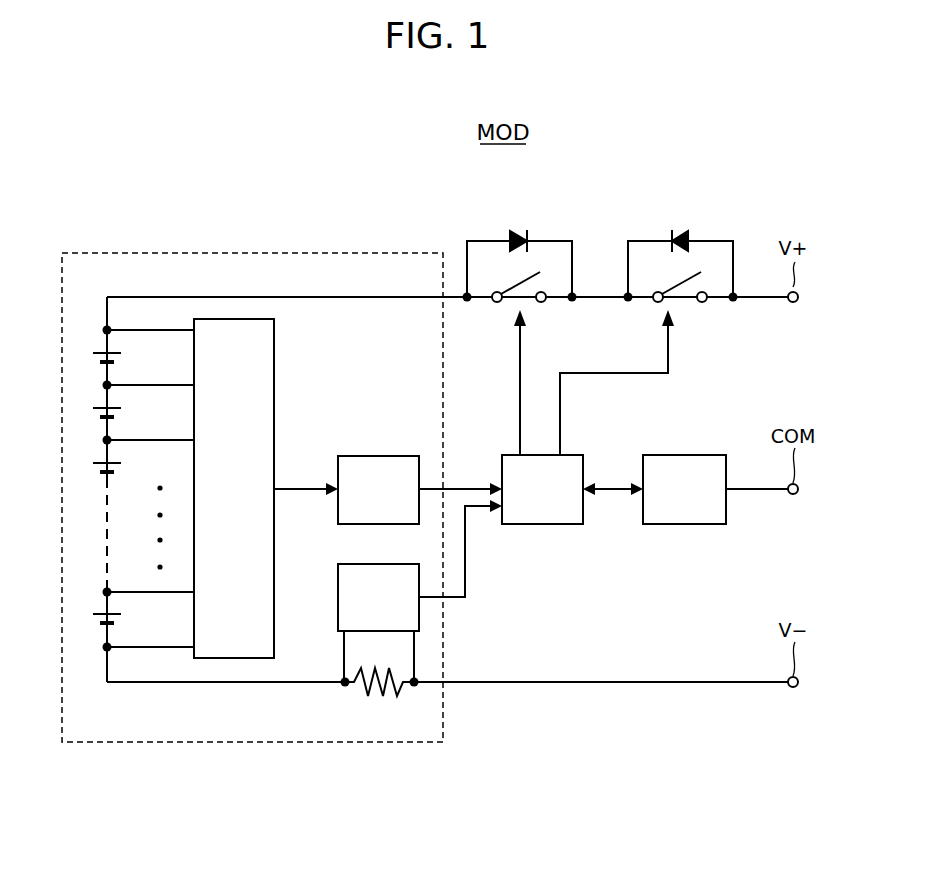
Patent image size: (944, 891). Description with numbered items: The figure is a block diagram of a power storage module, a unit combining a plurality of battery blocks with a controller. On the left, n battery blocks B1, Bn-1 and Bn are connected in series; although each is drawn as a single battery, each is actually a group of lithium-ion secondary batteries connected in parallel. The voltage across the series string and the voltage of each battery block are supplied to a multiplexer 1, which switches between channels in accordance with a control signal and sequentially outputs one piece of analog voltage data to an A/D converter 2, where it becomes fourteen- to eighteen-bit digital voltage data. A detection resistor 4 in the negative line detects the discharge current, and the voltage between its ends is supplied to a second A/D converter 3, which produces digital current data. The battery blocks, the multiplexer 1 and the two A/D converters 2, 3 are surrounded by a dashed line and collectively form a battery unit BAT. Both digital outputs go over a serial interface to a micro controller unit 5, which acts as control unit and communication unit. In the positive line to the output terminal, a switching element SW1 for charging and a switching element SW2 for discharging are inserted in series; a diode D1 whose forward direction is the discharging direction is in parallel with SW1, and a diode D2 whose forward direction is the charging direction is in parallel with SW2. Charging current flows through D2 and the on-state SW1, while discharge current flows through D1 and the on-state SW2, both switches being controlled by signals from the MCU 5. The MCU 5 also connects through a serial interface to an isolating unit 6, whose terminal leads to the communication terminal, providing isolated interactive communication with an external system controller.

The multiplexer 1 is at (274, 353).
The A/D converter 2 is at (378, 456).
The A/D converter 3 is at (378, 564).
The detection resistor 4 is at (375, 689).
The micro controller unit 5 is at (570, 455).
The isolating unit 6 is at (683, 455).
The battery unit BAT is at (255, 252).
The battery block Bn is at (122, 358).
The battery block Bn-1 is at (122, 413).
The battery block B1 is at (122, 619).
The diode D1 is at (518, 232).
The diode D2 is at (687, 232).
The switching element for charging SW1 is at (528, 300).
The switching element for discharging SW2 is at (689, 300).